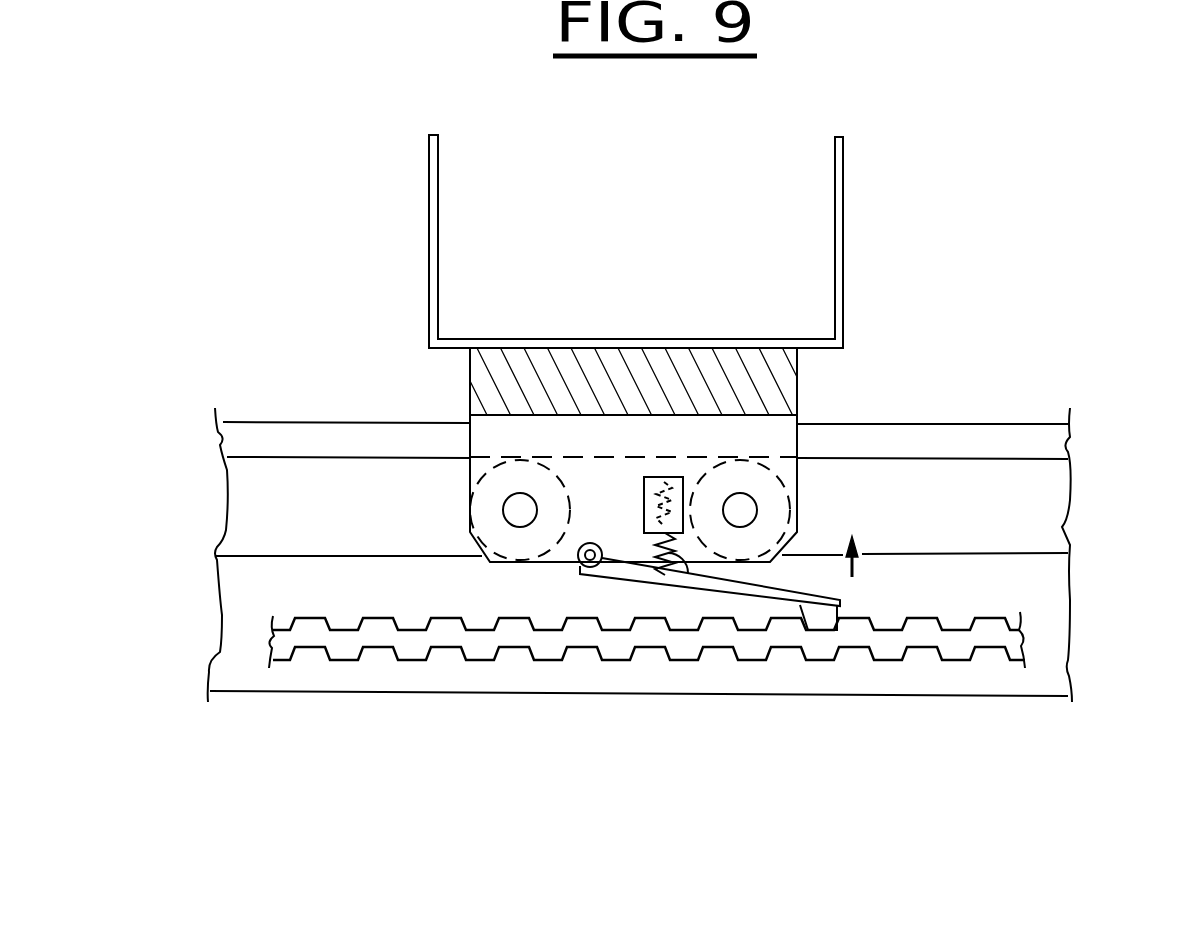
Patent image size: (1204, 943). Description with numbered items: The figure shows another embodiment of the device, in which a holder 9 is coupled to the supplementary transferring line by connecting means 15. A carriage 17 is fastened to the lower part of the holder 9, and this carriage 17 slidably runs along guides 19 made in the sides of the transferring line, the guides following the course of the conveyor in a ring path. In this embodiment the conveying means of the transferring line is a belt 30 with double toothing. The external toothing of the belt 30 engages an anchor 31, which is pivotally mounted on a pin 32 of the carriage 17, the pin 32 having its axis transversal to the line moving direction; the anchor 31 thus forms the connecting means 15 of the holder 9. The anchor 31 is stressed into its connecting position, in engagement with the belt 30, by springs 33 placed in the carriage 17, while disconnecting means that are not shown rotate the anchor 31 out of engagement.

The holder 9 is at (843, 227).
The connecting means 15 is at (813, 393).
The carriage 17 is at (478, 370).
The guide 19 is at (270, 556).
The belt with double toothing 30 is at (917, 618).
The anchor 31 is at (824, 618).
The pin 32 is at (580, 563).
The spring 33 is at (688, 550).